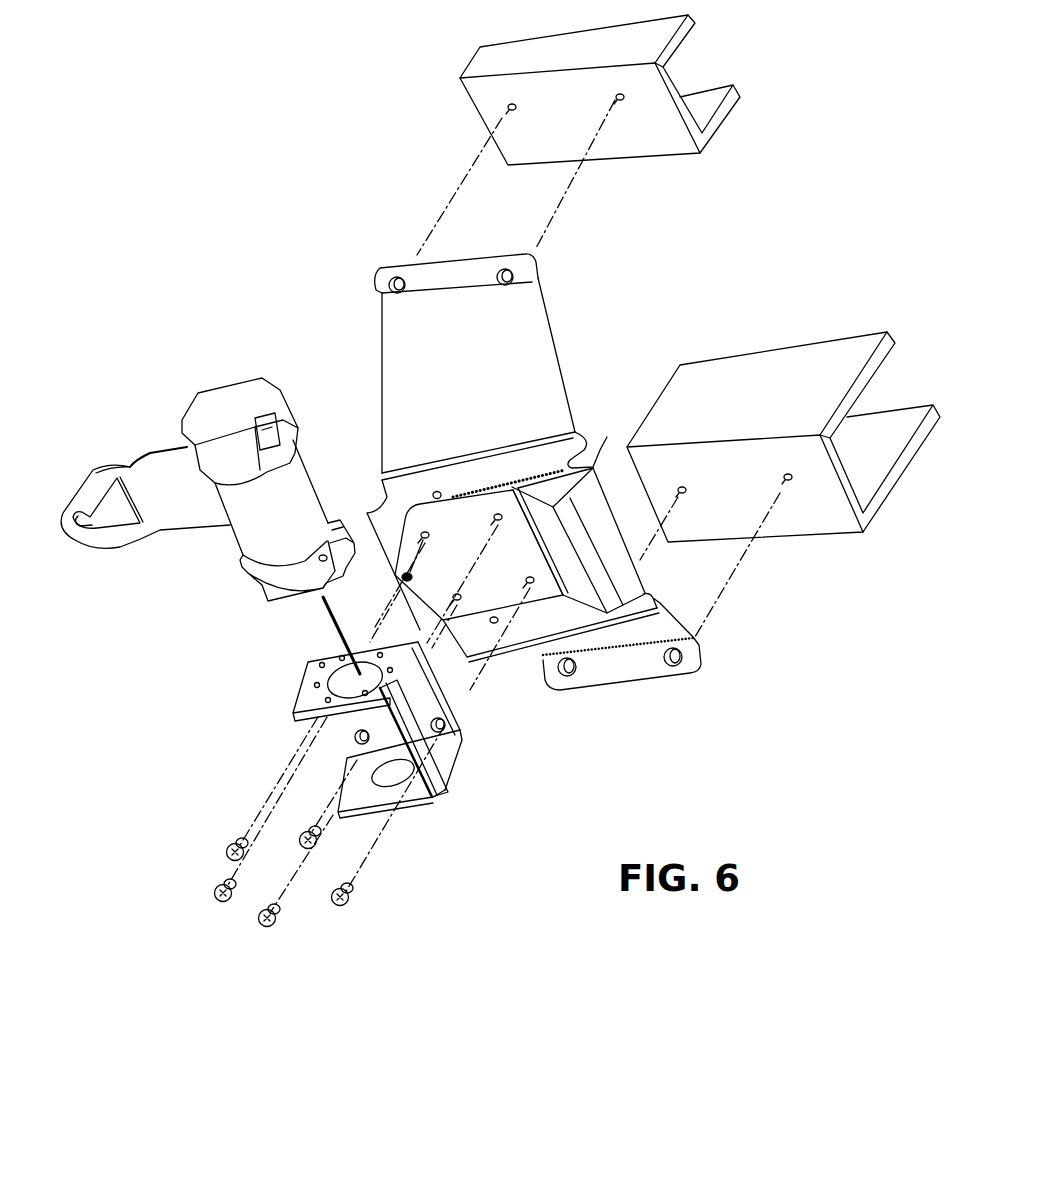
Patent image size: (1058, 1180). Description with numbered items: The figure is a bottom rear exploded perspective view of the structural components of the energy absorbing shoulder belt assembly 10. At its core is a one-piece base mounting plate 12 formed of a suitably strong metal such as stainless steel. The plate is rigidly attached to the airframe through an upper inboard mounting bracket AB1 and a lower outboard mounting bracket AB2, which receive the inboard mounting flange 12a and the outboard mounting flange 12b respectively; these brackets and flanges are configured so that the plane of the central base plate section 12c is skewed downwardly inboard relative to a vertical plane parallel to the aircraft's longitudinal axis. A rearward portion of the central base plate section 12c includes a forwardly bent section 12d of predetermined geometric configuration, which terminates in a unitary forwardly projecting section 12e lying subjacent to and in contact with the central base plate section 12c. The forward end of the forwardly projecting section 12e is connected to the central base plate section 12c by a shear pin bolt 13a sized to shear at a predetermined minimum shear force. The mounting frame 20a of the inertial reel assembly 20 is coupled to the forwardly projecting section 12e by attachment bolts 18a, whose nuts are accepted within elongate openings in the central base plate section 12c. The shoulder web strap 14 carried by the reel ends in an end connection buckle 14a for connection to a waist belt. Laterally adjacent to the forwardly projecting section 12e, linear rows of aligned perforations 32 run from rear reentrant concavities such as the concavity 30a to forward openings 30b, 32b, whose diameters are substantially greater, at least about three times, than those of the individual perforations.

The energy absorbing shoulder belt assembly 10 is at (758, 652).
The base mounting plate 12 is at (568, 382).
The inboard mounting flange 12a is at (483, 356).
The outboard mounting flange 12b is at (640, 637).
The central base plate section 12c is at (540, 452).
The forwardly bent section 12d is at (609, 568).
The forwardly projecting section 12e is at (527, 567).
The shear pin bolt 13a is at (214, 893).
The shoulder web strap 14 is at (128, 488).
The end connection buckle 14a is at (95, 488).
The attachment bolts 18a is at (240, 855).
The inertial reel assembly 20 is at (279, 516).
The mounting frame 20a is at (445, 747).
The rear reentrant concavity 30a is at (582, 462).
The forward opening 30b is at (436, 491).
The aligned perforations 32 is at (558, 606).
The forward opening 32b is at (496, 626).
The upper inboard mounting bracket AB1 is at (589, 108).
The lower outboard mounting bracket AB2 is at (818, 410).